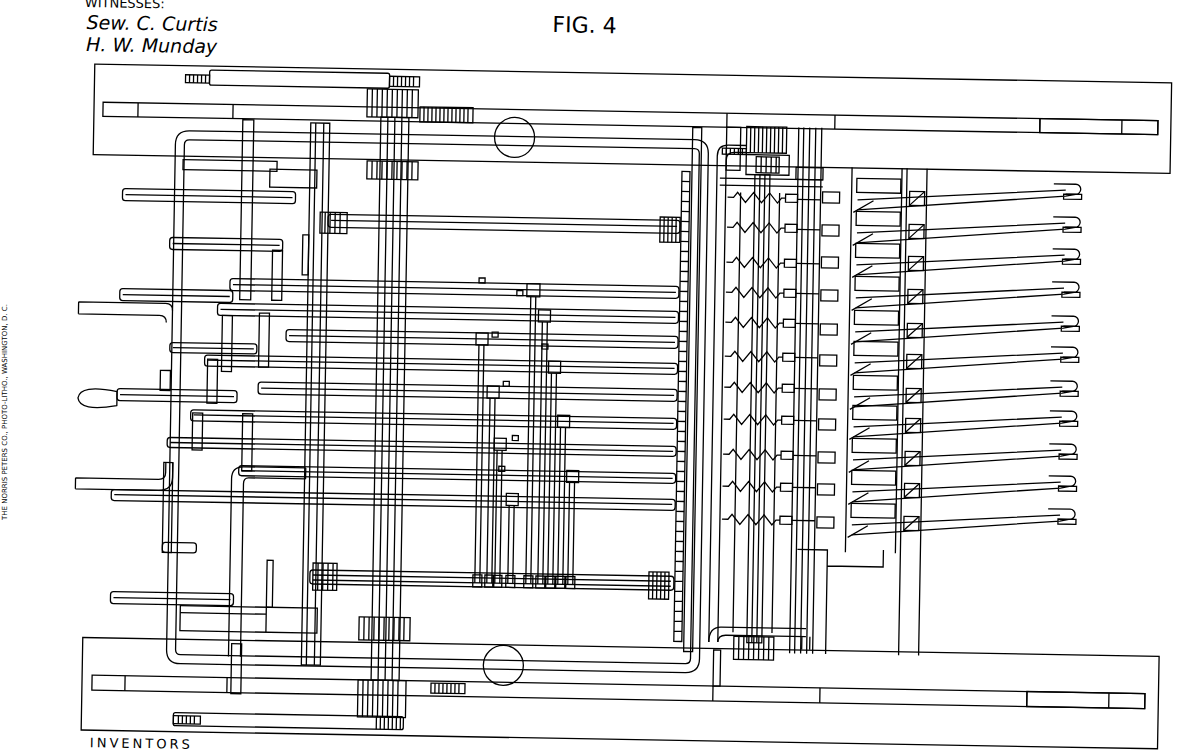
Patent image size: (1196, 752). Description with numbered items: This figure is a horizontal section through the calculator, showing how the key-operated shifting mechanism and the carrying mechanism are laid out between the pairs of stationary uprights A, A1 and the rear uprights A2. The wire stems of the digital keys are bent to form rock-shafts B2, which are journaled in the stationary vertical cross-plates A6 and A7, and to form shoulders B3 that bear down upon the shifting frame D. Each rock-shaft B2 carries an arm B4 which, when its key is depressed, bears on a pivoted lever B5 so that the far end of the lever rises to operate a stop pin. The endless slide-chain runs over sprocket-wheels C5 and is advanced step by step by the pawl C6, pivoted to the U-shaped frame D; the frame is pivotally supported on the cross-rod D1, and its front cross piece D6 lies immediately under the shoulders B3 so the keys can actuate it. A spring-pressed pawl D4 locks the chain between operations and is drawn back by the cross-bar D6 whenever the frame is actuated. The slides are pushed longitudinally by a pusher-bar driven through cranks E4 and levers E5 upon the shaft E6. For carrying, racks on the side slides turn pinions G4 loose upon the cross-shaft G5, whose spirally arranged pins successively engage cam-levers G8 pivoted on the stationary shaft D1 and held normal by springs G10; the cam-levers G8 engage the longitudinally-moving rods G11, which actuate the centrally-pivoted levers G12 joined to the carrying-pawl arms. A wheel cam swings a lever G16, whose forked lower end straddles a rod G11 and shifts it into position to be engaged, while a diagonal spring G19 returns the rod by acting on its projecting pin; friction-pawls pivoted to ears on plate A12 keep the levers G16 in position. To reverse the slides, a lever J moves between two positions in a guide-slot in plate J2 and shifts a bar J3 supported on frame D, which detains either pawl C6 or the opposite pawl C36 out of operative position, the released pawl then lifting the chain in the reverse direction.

The stationary uprights A is at (150, 113).
The stationary uprights A1 is at (742, 110).
The rear uprights A2 is at (1075, 112).
The vertical cross-plate A6 is at (315, 265).
The vertical cross-plate A7 is at (676, 259).
The plate A12 is at (915, 590).
The rock-shafts B2 is at (451, 288).
The shoulders B3 is at (138, 298).
The arm B4 is at (505, 287).
The lever B5 is at (502, 540).
The sprocket-wheels C5 is at (333, 200).
The pawl C6 is at (281, 621).
The pawl C36 is at (279, 193).
The frame D is at (171, 335).
The cross-rod D1 is at (814, 143).
The spring-pressed pawl D4 is at (285, 518).
The cross-bar D6 is at (166, 466).
The cranks E4 is at (302, 82).
The levers E5 is at (450, 114).
The shaft E6 is at (404, 201).
The pinions G4 is at (764, 159).
The cross-shaft G5 is at (818, 593).
The cam-levers G8 is at (792, 522).
The springs G10 is at (724, 485).
The longitudinally-moving rods G11 is at (979, 362).
The centrally-pivoted levers G12 is at (1075, 410).
The lever G16 is at (925, 529).
The spring G19 is at (922, 507).
The lever J is at (157, 399).
The plate J2 is at (157, 380).
The bar J3 is at (242, 228).